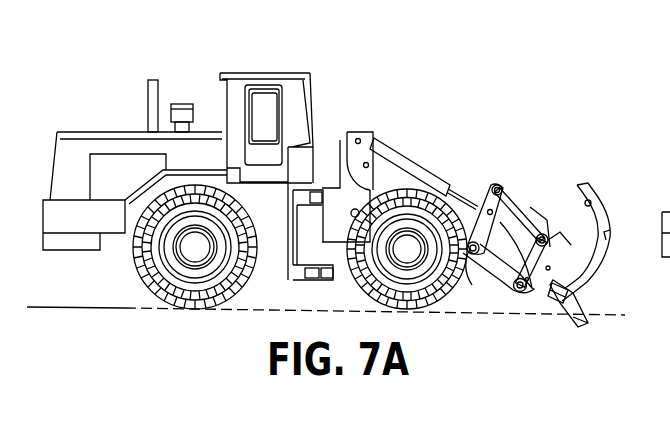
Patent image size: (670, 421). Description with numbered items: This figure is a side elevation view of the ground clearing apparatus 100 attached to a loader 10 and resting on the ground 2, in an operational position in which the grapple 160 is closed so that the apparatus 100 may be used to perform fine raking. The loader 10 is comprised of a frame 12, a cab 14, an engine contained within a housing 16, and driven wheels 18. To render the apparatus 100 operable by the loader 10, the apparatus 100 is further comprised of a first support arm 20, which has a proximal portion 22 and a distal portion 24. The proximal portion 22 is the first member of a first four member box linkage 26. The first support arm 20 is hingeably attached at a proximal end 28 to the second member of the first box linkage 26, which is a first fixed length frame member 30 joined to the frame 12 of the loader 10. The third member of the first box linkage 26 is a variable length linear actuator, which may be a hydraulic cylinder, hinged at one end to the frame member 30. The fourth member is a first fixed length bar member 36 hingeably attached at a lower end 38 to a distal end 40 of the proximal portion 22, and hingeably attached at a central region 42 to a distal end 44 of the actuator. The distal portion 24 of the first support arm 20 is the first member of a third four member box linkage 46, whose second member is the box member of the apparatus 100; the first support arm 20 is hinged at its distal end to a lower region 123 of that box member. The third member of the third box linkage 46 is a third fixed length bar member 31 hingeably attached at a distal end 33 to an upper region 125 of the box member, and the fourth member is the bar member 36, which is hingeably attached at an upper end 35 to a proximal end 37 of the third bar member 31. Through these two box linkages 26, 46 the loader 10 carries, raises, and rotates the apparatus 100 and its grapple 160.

The ground surface 2 is at (60, 309).
The loader 10 is at (72, 100).
The frame 12 is at (255, 262).
The cab 14 is at (255, 73).
The housing 16 is at (118, 132).
The driven wheels 18 is at (185, 288).
The first support arm 20 is at (465, 299).
The proximal portion 22 is at (388, 183).
The distal portion 24 is at (516, 300).
The first four member box linkage 26 is at (483, 114).
The proximal end 28 is at (338, 160).
The first fixed length frame member 30 is at (350, 140).
The third fixed length bar member 31 is at (509, 196).
The distal end 33 is at (544, 221).
The upper end 35 is at (483, 185).
The first fixed length bar member 36 is at (557, 186).
The proximal end 37 is at (496, 186).
The lower end 38 is at (490, 270).
The distal end 40 is at (460, 295).
The central region 42 is at (508, 210).
The distal end 44 is at (478, 197).
The third four member box linkage 46 is at (568, 178).
The ground clearing apparatus 100 is at (616, 123).
The lower region 123 is at (541, 298).
The upper region 125 is at (600, 273).
The grapple 160 is at (616, 290).